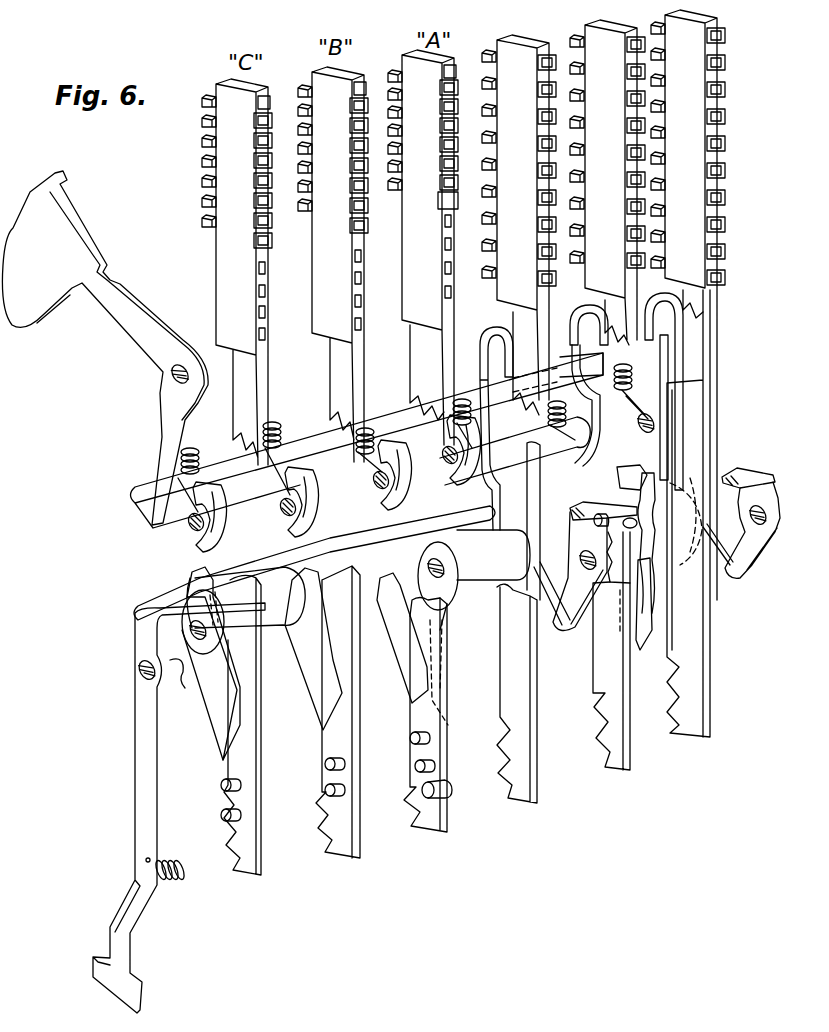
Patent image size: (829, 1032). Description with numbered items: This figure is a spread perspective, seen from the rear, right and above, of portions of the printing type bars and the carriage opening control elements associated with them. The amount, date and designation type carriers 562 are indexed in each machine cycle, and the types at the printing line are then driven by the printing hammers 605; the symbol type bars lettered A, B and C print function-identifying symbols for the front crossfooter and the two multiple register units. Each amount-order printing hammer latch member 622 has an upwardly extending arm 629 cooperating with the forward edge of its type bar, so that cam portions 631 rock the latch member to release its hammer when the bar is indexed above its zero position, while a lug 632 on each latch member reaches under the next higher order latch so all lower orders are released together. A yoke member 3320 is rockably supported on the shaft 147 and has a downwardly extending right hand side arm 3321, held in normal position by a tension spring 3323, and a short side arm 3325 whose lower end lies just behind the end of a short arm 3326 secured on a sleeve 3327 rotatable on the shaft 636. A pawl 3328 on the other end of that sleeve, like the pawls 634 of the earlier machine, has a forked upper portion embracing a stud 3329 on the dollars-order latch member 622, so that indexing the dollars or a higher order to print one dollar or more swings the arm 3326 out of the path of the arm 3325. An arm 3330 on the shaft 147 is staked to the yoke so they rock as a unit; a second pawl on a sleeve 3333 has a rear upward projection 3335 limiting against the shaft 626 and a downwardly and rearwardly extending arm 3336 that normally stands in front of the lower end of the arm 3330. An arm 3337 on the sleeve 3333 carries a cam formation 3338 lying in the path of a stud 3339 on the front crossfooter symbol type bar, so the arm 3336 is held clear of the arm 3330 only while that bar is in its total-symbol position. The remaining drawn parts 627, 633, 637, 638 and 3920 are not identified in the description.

The printing hammer 605 is at (142, 338).
The shaft 626 is at (190, 535).
The spring 627 is at (282, 440).
The cam portion 631 is at (327, 405).
The lug 632 is at (240, 503).
The bar end 633 is at (596, 367).
The rod 637 is at (347, 545).
The type carrier 562 is at (345, 348).
The upwardly extending arm 629 is at (587, 317).
The printing hammer latch member 622 is at (655, 443).
The shaft 636 is at (443, 560).
The stud 3329 is at (650, 477).
The sleeve 3327 is at (663, 497).
The yoke member 3320 is at (753, 465).
The shaft 147 is at (750, 518).
The plate 3920 is at (603, 515).
The rear upward projection 3335 is at (604, 505).
The side arm 3325 is at (720, 567).
The short arm 3326 is at (715, 575).
The pawl 3328 is at (640, 610).
The arm 3330 is at (563, 617).
The arm 3336 is at (589, 608).
The sleeve 3333 is at (433, 596).
The arm 3337 is at (430, 600).
The cam formation 3338 is at (450, 685).
The stud 3339 is at (435, 782).
The pin 638 is at (412, 743).
The pawl 634 is at (323, 693).
The right hand side arm 3321 is at (147, 758).
The tension spring 3323 is at (187, 846).